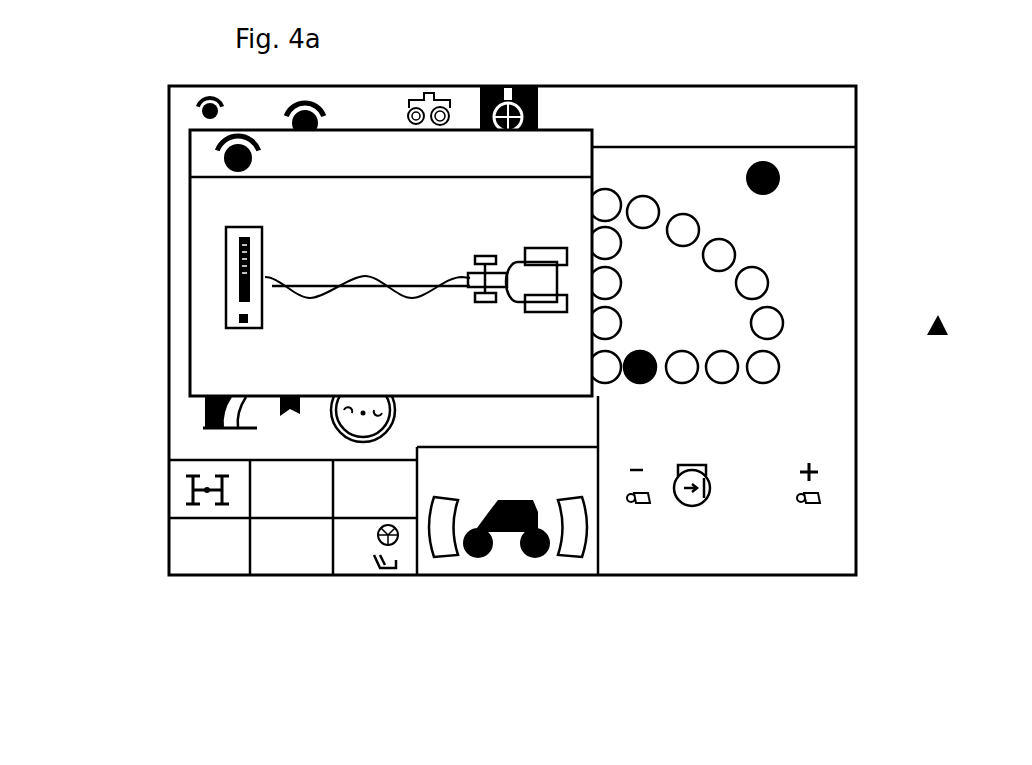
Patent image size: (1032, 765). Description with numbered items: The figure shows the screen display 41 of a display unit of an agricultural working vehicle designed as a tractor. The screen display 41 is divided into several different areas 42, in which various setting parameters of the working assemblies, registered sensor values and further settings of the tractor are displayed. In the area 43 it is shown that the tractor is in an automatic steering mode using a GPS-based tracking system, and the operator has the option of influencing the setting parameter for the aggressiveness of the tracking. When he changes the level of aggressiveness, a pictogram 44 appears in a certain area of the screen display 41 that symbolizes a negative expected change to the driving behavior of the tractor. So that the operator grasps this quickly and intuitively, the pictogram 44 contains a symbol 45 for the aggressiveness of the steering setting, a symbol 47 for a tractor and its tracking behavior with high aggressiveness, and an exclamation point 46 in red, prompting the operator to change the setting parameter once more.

The screen display 41 is at (945, 324).
The areas 42 is at (820, 122).
The area 43 is at (360, 567).
The pictogram 44 is at (233, 360).
The symbol for the aggressiveness of the steering setting 45 is at (232, 166).
The exclamation point 46 is at (232, 257).
The symbol for a tractor and its tracking behavior 47 is at (517, 280).